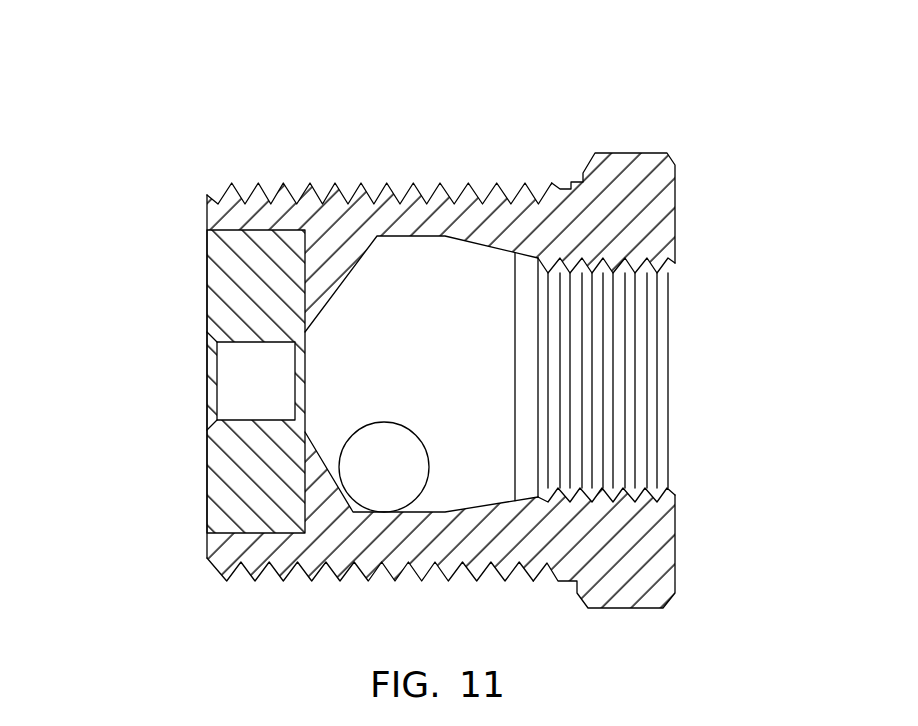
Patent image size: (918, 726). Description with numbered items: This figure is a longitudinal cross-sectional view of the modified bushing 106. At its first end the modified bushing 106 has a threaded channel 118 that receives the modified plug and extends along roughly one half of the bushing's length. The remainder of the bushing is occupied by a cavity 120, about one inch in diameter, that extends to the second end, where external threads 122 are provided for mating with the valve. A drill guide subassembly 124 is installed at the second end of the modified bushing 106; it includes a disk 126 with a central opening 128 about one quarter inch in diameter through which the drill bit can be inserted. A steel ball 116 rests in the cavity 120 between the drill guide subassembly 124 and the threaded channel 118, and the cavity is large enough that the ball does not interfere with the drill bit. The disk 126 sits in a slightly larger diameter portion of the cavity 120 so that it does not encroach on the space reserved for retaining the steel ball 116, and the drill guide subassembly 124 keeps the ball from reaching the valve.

The modified bushing 106 is at (708, 123).
The steel ball 116 is at (353, 467).
The threaded channel 118 is at (615, 248).
The cavity 120 is at (463, 258).
The external threads 122 is at (279, 192).
The drill guide subassembly 124 is at (205, 263).
The disk 126 is at (213, 303).
The opening 128 is at (210, 392).